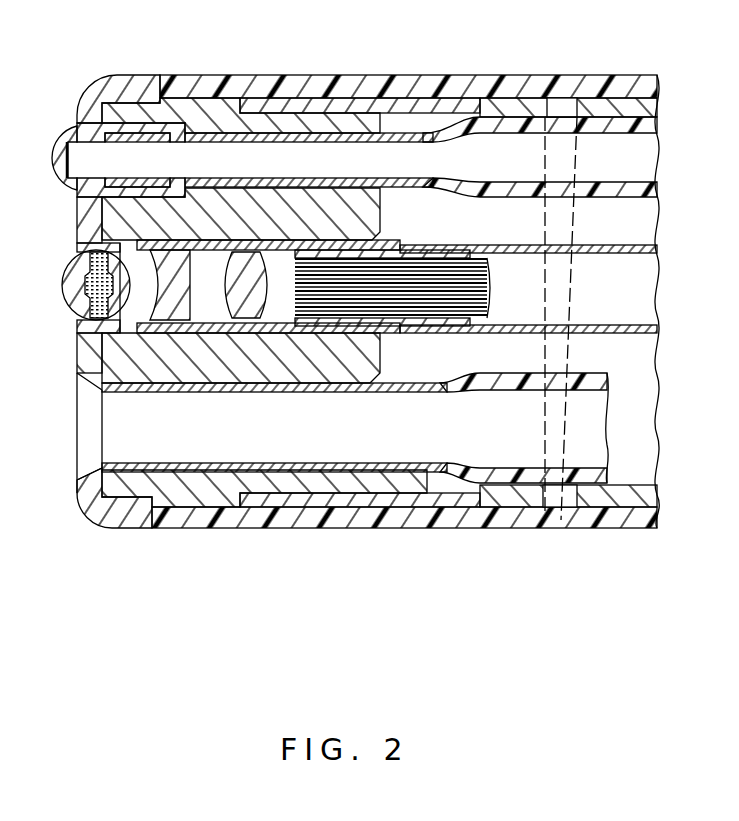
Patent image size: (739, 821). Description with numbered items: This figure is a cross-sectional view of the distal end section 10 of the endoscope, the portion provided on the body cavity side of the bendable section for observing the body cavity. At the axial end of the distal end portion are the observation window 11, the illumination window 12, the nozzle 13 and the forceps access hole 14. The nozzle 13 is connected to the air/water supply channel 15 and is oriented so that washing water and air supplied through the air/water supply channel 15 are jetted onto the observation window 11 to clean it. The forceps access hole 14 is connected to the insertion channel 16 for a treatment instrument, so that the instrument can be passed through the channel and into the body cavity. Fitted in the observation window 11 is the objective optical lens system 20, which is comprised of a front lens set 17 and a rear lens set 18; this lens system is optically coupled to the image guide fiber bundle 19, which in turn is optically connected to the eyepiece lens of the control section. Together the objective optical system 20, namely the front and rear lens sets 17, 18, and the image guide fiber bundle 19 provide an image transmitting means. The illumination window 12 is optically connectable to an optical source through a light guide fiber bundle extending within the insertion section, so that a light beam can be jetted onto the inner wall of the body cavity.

The distal end section 10 is at (281, 73).
The observation window 11 is at (75, 248).
The illumination window 12 is at (122, 283).
The nozzle 13 is at (57, 150).
The forceps access hole 14 is at (112, 447).
The air/water supply channel 15 is at (660, 152).
The insertion channel 16 is at (95, 280).
The front lens set 17 is at (125, 345).
The rear lens set 18 is at (216, 345).
The image guide fiber bundle 19 is at (437, 310).
The objective optical lens system 20 is at (165, 372).